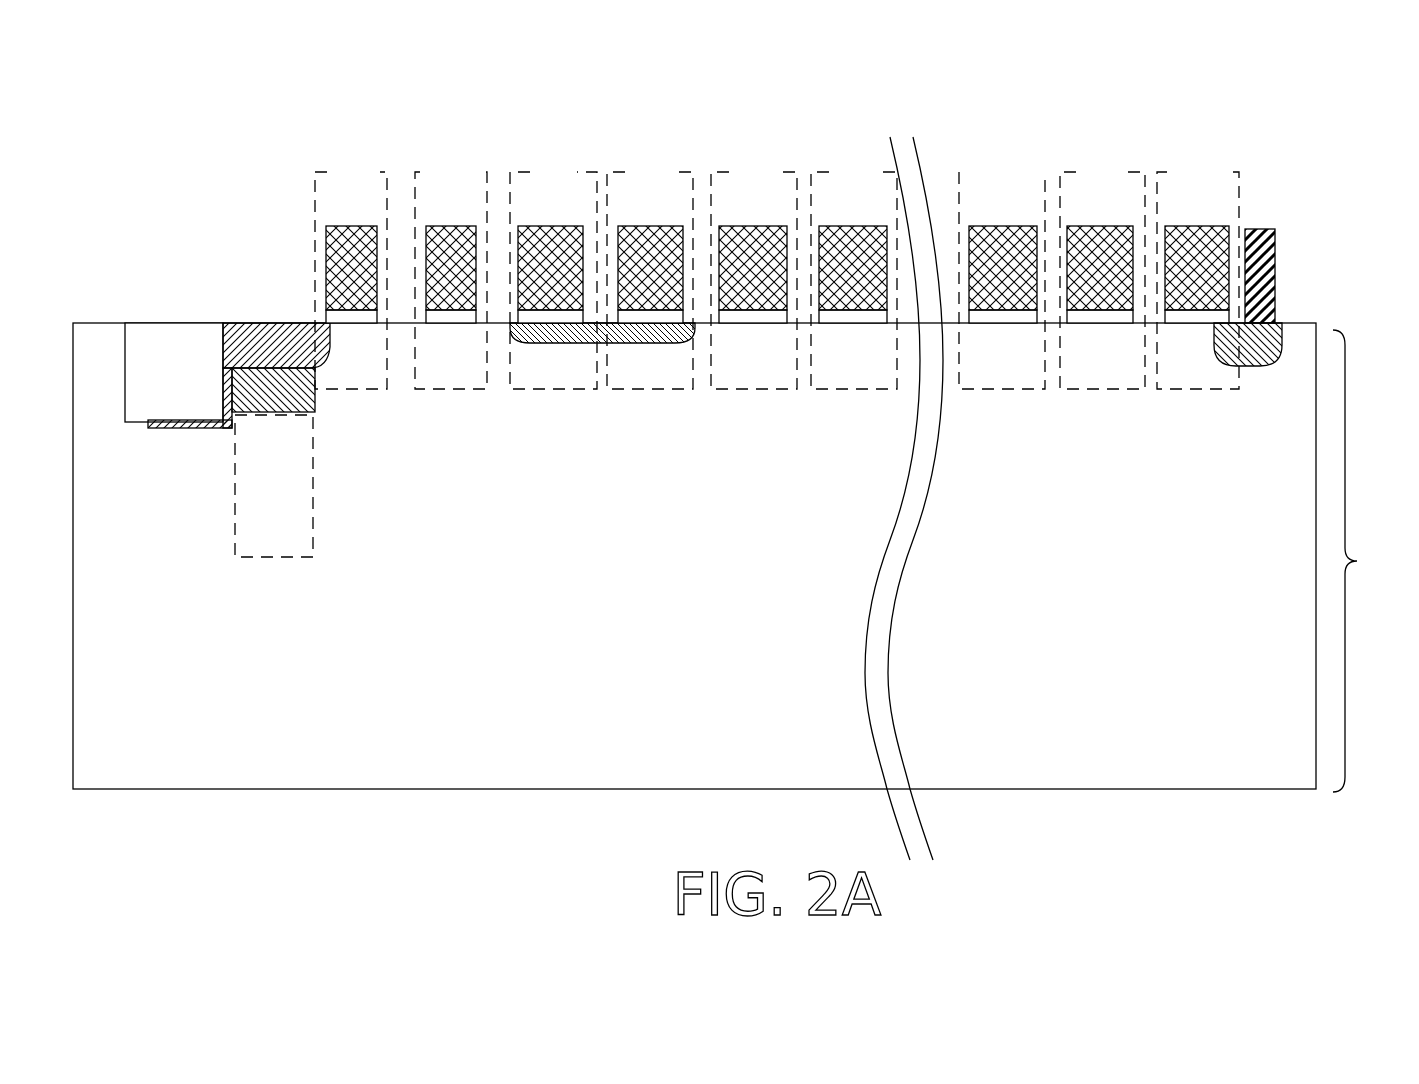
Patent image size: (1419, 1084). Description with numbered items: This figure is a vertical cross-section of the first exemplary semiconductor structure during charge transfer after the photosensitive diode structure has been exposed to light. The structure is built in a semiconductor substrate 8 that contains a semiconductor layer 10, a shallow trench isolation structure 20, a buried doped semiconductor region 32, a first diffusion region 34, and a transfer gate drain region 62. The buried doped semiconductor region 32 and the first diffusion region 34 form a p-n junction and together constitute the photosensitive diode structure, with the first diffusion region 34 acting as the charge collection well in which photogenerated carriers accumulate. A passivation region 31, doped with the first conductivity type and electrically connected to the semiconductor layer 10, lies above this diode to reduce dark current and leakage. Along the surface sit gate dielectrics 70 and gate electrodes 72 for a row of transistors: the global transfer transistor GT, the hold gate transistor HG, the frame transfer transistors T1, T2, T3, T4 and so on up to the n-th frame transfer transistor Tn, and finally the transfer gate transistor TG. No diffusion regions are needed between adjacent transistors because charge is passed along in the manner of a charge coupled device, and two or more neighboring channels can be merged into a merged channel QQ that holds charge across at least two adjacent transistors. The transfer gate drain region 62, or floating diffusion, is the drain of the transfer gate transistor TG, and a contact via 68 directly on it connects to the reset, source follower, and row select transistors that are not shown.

The semiconductor substrate 8 is at (1364, 561).
The semiconductor layer 10 is at (637, 615).
The isolation structure 20 is at (152, 392).
The passivation region 31 is at (246, 323).
The buried doped semiconductor region 32 is at (249, 507).
The first diffusion region 34 is at (315, 407).
The transfer gate drain region 62 is at (1243, 365).
The contact via 68 is at (1258, 230).
The gate dielectrics 70 is at (452, 323).
The gate electrodes 72 is at (537, 230).
The merged channel QQ is at (645, 343).
The global transfer transistor GT is at (380, 187).
The hold gate transistor HG is at (420, 187).
The first frame transfer transistor T1 is at (530, 187).
The second frame transfer transistor T2 is at (625, 187).
The third frame transfer transistor T3 is at (729, 187).
The fourth frame transfer transistor T4 is at (829, 187).
The n-th frame transfer transistor Tn is at (1078, 187).
The transfer gate transistor TG is at (1168, 187).